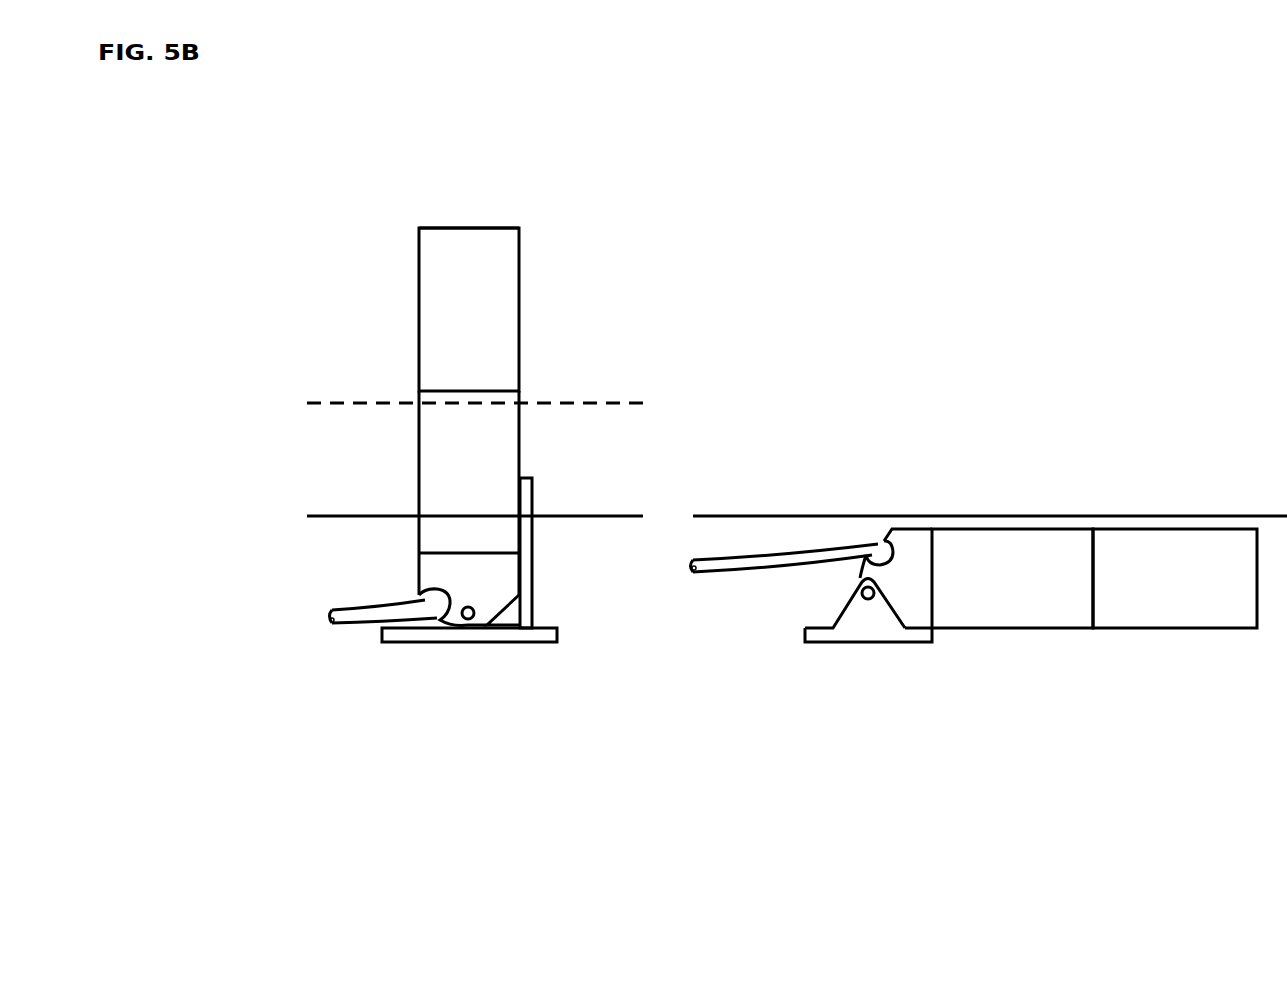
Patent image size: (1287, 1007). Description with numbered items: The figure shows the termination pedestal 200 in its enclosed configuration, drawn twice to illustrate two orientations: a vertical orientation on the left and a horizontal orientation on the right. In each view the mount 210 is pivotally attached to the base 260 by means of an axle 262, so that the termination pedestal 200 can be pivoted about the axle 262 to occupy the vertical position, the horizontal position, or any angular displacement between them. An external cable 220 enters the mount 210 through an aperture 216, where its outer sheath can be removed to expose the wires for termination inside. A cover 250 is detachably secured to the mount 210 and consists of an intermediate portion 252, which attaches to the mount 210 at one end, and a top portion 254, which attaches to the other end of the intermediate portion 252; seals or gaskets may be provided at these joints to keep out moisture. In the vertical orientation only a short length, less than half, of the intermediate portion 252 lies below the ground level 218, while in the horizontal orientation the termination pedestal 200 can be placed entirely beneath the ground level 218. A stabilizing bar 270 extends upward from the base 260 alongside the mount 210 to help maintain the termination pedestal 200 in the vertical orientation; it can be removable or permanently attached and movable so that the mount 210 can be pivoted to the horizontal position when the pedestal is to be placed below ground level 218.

The termination pedestal 200 is at (1271, 199).
The mount 210 is at (419, 576).
The aperture 216 is at (440, 598).
The ground level 218 is at (595, 404).
The cable 220 is at (332, 612).
The cover 250 is at (552, 284).
The intermediate portion 252 is at (419, 472).
The top portion 254 is at (419, 308).
The base 260 is at (483, 634).
The axle 262 is at (445, 612).
The stabilizing bar 270 is at (533, 554).